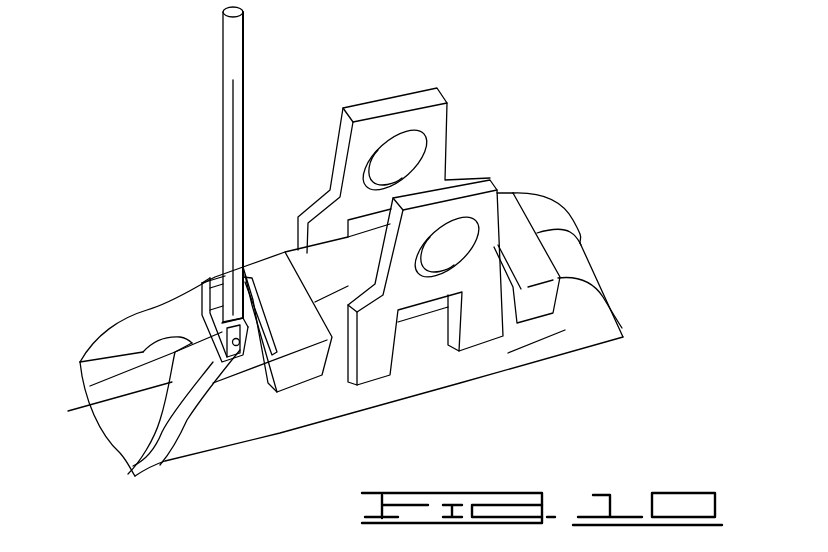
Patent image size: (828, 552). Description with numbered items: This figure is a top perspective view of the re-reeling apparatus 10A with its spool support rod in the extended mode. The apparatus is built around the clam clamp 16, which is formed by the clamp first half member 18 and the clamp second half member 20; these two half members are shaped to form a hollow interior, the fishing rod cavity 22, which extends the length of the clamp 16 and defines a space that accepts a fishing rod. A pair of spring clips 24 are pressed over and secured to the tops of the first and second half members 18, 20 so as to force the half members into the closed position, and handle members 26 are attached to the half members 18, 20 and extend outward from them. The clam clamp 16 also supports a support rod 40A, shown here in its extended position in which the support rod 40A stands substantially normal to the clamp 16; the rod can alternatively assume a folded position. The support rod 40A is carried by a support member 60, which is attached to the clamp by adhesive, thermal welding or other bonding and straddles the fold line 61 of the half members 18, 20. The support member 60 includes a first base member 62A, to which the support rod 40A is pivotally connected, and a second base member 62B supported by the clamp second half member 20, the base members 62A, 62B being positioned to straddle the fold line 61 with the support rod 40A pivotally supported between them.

The re-reeling apparatus 10A is at (193, 78).
The clam clamp 16 is at (150, 320).
The clamp first half member 18 is at (203, 435).
The clamp second half member 20 is at (182, 290).
The fishing rod cavity 22 is at (130, 426).
The spring clips 24 is at (268, 268).
The handle members 26 is at (386, 105).
The support rod 40A is at (244, 80).
The support member 60 is at (160, 465).
The fold line 61 is at (117, 408).
The first base member 62A is at (238, 355).
The second base member 62B is at (213, 275).